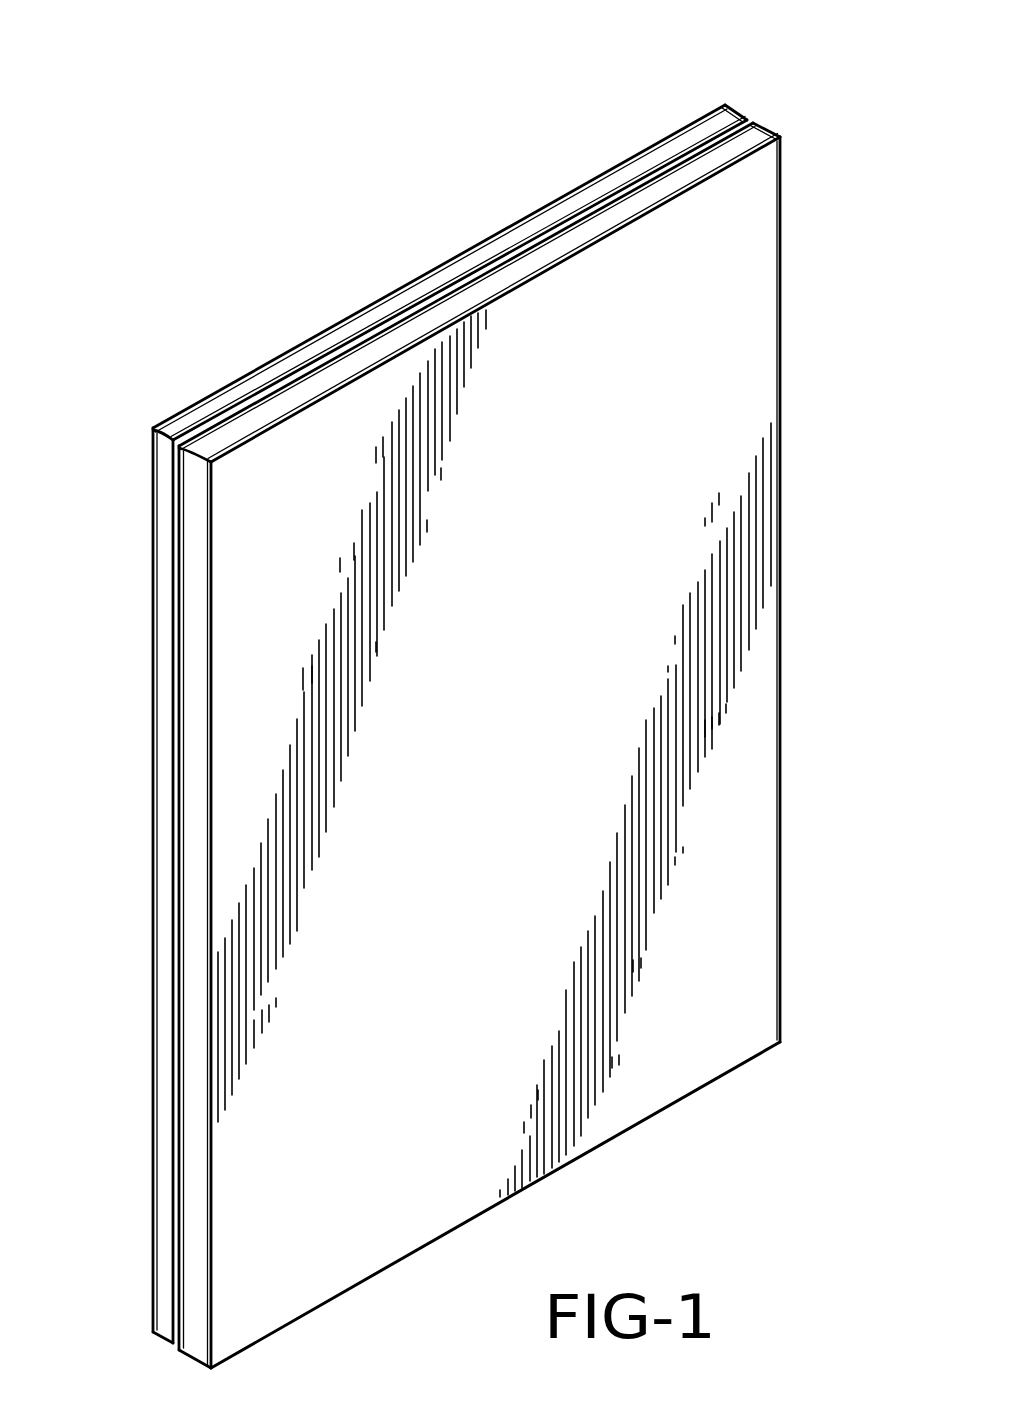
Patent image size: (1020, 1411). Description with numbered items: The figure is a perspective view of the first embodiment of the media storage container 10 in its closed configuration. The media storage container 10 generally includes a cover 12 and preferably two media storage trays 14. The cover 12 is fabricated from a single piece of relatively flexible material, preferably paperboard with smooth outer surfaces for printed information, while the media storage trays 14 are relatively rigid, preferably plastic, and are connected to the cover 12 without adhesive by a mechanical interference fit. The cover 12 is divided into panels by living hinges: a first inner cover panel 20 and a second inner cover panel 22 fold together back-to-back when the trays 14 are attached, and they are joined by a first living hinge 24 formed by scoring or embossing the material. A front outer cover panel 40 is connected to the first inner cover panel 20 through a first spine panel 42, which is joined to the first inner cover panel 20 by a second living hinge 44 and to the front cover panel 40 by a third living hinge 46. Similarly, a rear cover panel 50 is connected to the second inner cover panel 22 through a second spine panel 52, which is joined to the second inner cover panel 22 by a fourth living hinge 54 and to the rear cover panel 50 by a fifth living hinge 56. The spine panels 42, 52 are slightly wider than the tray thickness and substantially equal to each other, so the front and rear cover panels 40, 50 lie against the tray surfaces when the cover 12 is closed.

The media storage container 10 is at (421, 201).
The cover 12 is at (729, 366).
The media storage trays 14 is at (152, 531).
The first inner cover panel 20 is at (362, 340).
The second inner cover panel 22 is at (515, 262).
The first living hinge 24 is at (180, 700).
The front outer cover panel 40 is at (412, 278).
The first spine panel 42 is at (749, 112).
The second living hinge 44 is at (753, 114).
The third living hinge 46 is at (724, 101).
The rear cover panel 50 is at (737, 287).
The second spine panel 52 is at (772, 130).
The fourth living hinge 54 is at (755, 120).
The fifth living hinge 56 is at (783, 187).